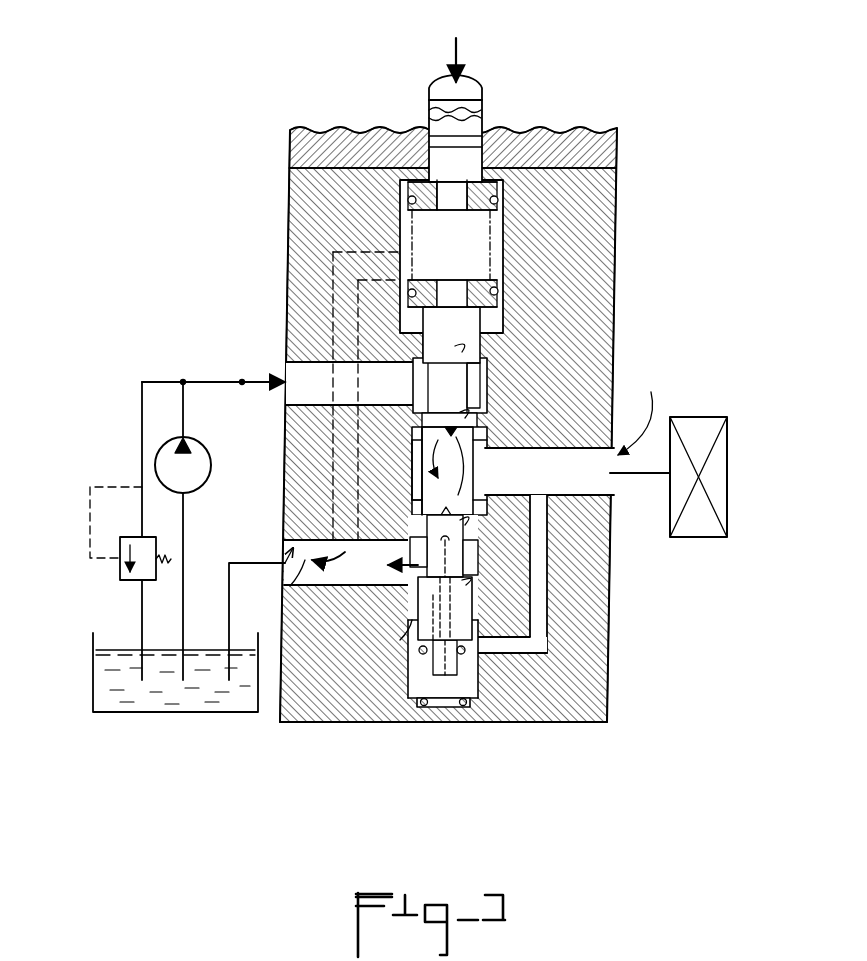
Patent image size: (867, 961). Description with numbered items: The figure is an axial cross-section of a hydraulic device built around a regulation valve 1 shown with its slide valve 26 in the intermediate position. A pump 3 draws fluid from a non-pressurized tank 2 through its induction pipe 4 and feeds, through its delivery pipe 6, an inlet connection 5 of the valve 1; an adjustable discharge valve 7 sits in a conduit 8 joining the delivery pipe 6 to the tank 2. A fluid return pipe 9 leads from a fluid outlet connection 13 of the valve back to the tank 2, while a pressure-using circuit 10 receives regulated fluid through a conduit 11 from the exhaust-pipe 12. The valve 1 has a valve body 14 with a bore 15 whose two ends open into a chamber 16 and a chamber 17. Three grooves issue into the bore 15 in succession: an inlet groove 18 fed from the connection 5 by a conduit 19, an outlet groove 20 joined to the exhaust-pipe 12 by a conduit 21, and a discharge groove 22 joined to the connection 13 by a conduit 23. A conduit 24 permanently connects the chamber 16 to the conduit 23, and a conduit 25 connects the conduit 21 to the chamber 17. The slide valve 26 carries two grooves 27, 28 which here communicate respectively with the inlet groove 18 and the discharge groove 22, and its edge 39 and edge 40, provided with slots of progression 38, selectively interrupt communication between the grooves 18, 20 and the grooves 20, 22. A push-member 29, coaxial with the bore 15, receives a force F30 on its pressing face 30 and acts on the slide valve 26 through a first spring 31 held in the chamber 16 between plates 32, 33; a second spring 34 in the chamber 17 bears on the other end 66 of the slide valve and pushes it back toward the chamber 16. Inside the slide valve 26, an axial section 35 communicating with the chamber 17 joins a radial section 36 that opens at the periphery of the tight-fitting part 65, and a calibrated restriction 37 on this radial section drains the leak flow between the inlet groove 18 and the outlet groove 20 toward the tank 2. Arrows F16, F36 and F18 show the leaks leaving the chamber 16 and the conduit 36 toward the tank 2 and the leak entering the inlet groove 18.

The regulation valve 1 is at (632, 236).
The fluid tank 2 is at (90, 640).
The pump 3 is at (200, 450).
The induction pipe 4 is at (184, 500).
The inlet connection 5 is at (282, 370).
The delivery pipe 6 is at (186, 392).
The adjustable discharge valve 7 is at (118, 568).
The conduit 8 is at (140, 415).
The fluid return pipe 9 is at (238, 560).
The pressure-using circuit 10 is at (707, 430).
The conduit 11 is at (640, 478).
The exhaust-pipe 12 is at (643, 410).
The fluid outlet connection 13 is at (280, 548).
The valve body 14 is at (587, 718).
The bore 15 is at (465, 348).
The chamber 16 is at (430, 228).
The chamber 17 is at (414, 683).
The inlet groove 18 is at (405, 372).
The conduit 19 is at (321, 376).
The outlet groove 20 is at (414, 462).
The conduit 21 is at (518, 458).
The discharge groove 22 is at (428, 595).
The conduit 23 is at (290, 586).
The conduit 24 is at (333, 272).
The conduit 25 is at (540, 650).
The slide valve 26 is at (518, 652).
The groove 27 is at (474, 379).
The groove 28 is at (472, 550).
The push-member 29 is at (470, 150).
The pressing face 30 is at (470, 86).
The first spring 31 is at (498, 292).
The plate 32 is at (490, 205).
The plate 33 is at (490, 302).
The second spring 34 is at (420, 650).
The axial section 35 is at (465, 612).
The radial section 36 is at (430, 570).
The calibrated restriction 37 is at (430, 620).
The slots of progression 38 is at (449, 471).
The edge 39 is at (414, 430).
The edge 40 is at (412, 497).
The part of the slide valve 65 is at (400, 640).
The end of the slide valve 66 is at (445, 707).
The force F30 is at (457, 50).
The arrow F18 is at (242, 386).
The arrow F16 is at (317, 524).
The arrow F36 is at (390, 534).